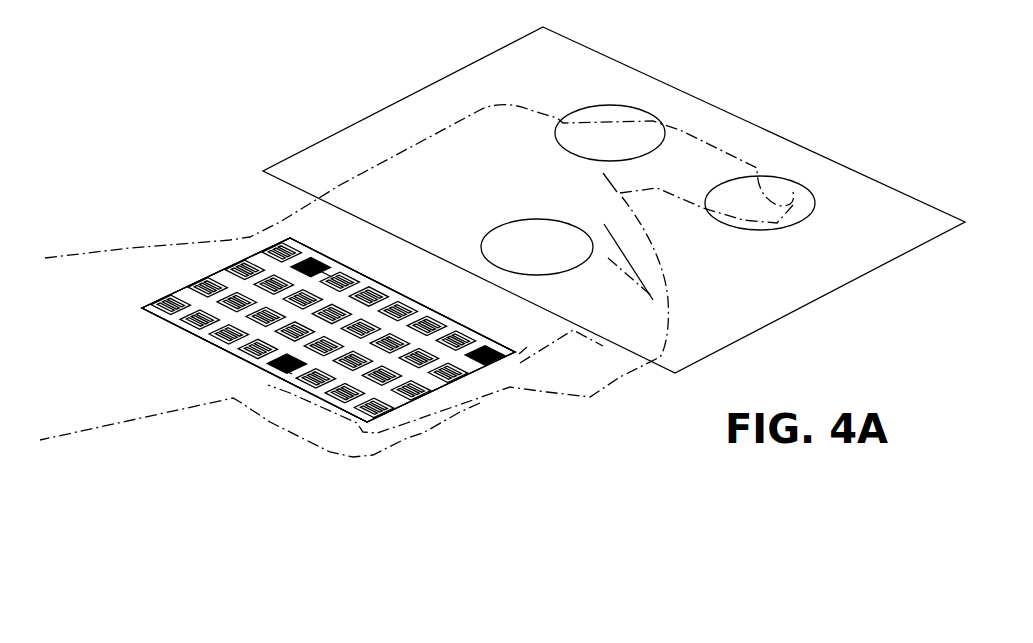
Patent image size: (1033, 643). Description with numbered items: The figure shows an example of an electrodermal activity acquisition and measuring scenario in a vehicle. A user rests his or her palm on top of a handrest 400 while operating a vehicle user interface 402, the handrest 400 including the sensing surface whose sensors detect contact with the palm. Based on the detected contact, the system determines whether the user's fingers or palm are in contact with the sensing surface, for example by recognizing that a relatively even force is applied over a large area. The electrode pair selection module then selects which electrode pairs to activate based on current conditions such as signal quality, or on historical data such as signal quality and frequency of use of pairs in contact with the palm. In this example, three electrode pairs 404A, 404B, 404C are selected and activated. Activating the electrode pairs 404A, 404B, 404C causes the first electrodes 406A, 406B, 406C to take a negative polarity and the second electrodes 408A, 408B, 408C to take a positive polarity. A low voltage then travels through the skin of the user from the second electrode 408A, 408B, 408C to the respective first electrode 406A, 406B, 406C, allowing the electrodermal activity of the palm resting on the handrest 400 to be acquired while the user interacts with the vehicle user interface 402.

The handrest 400 is at (423, 437).
The vehicle user interface 402 is at (610, 82).
The electrode pair 404A is at (508, 343).
The electrode pair 404B is at (306, 252).
The electrode pair 404C is at (262, 350).
The first electrode 406A is at (483, 345).
The first electrode 406B is at (312, 254).
The first electrode 406C is at (272, 368).
The second electrode 408A is at (527, 347).
The second electrode 408B is at (318, 270).
The second electrode 408C is at (280, 368).